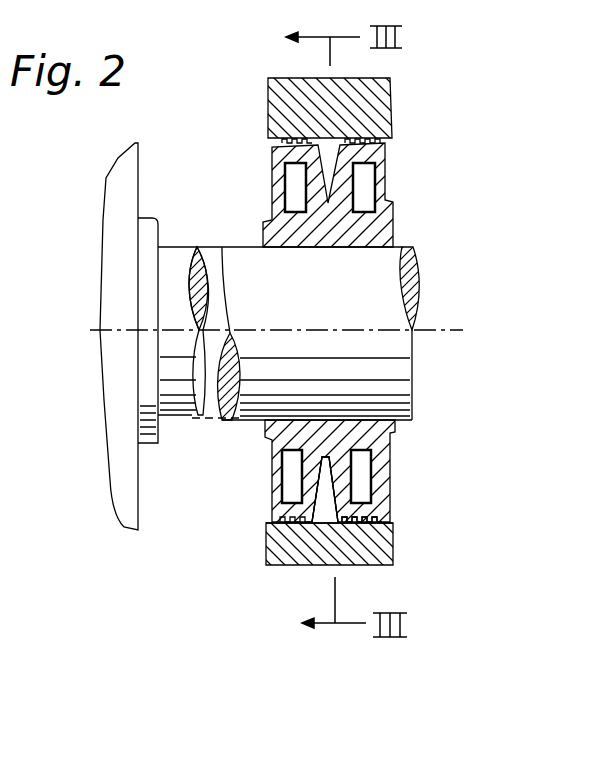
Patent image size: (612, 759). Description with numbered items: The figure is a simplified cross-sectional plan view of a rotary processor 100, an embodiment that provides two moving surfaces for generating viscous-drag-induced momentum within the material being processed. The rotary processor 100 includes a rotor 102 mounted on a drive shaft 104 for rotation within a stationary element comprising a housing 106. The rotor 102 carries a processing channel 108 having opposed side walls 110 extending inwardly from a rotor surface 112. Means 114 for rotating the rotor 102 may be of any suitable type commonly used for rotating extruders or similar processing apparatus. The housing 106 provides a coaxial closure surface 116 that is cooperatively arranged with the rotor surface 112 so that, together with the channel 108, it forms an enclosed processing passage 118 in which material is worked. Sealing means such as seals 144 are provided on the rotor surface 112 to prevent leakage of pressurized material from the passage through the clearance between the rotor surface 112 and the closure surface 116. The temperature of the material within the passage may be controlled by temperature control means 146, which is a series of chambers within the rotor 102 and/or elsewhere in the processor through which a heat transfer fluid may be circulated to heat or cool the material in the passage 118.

The rotary processor 100 is at (488, 96).
The rotor 102 is at (386, 178).
The drive shaft 104 is at (383, 290).
The housing 106 is at (389, 83).
The processing channel 108 is at (228, 330).
The side walls 110 is at (318, 478).
The rotor surface 112 is at (268, 530).
The means for rotating rotor 114 is at (140, 170).
The coaxial closure surface 116 is at (392, 522).
The enclosed processing passage 118 is at (325, 516).
The seals 144 is at (268, 122).
The temperature control means 146 is at (376, 462).